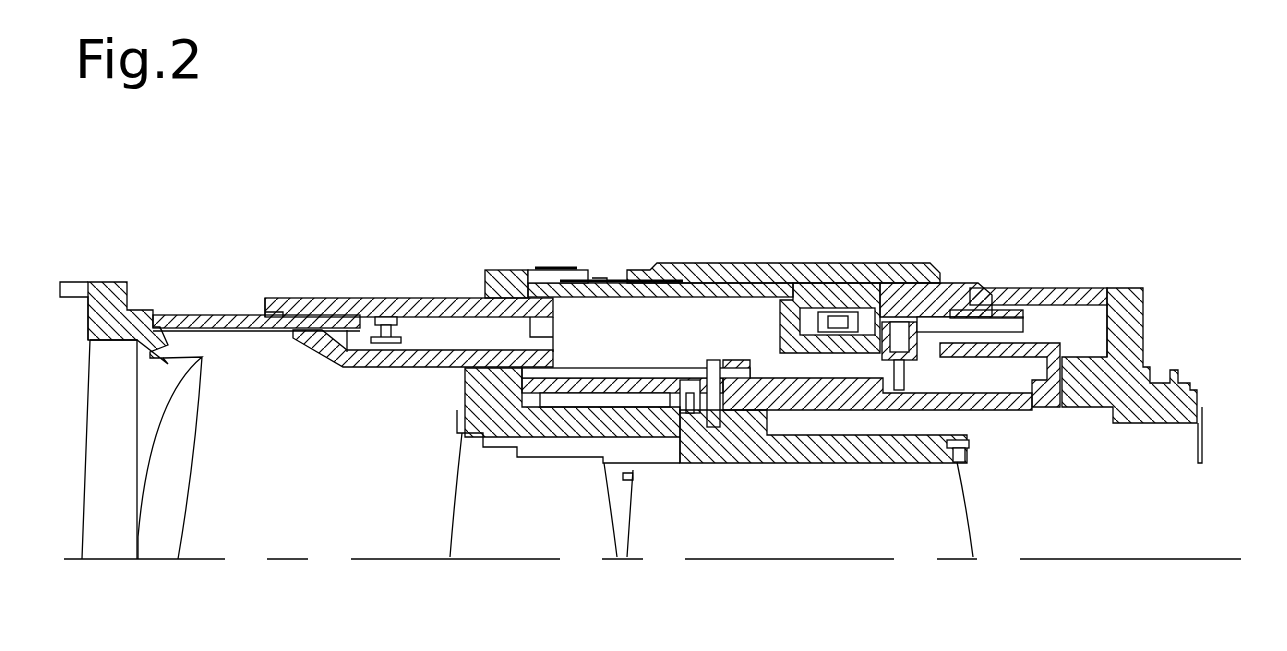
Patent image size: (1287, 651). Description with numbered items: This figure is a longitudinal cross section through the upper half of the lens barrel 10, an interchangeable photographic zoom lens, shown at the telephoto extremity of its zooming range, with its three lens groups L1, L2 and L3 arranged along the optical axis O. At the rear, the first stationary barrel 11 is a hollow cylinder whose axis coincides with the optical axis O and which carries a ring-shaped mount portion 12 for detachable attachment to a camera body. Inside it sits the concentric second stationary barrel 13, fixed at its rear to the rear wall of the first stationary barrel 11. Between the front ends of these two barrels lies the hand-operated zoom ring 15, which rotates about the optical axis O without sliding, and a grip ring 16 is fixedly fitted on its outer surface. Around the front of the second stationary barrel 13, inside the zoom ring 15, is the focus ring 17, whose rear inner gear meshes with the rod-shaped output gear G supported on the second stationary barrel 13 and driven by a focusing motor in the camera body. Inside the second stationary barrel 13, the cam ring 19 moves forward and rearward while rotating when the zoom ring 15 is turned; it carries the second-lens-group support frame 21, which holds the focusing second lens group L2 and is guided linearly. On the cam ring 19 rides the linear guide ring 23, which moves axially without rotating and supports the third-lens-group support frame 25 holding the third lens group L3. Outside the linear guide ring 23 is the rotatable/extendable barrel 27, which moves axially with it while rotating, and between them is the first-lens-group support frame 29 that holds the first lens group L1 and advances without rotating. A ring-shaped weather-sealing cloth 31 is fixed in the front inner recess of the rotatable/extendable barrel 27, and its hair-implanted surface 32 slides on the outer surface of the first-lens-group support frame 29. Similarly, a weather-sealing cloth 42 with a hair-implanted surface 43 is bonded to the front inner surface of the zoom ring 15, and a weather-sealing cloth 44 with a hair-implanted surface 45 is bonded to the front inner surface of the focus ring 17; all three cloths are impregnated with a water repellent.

The lens barrel 10 is at (330, 232).
The first stationary barrel 11 is at (1068, 288).
The mount portion 12 is at (1200, 430).
The second stationary barrel 13 is at (1010, 350).
The zoom ring 15 is at (960, 290).
The grip ring 16 is at (762, 275).
The focus ring 17 is at (515, 278).
The cam ring 19 is at (828, 385).
The second-lens-group support frame 21 is at (495, 405).
The linear guide ring 23 is at (688, 367).
The third-lens-group support frame 25 is at (970, 445).
The rotatable/extendable barrel 27 is at (397, 303).
The first-lens-group support frame 29 is at (240, 315).
The weather-sealing cloth 31 is at (282, 298).
The hair-implanted surface 32 is at (283, 330).
The weather-sealing cloth 42 is at (622, 296).
The hair-implanted surface 43 is at (622, 296).
The weather-sealing cloth 44 is at (490, 292).
The hair-implanted surface 45 is at (497, 313).
The output gear G is at (855, 318).
The first lens group L1 is at (118, 452).
The second lens group L2 is at (450, 507).
The third lens group L3 is at (945, 513).
The optical axis O is at (1068, 563).